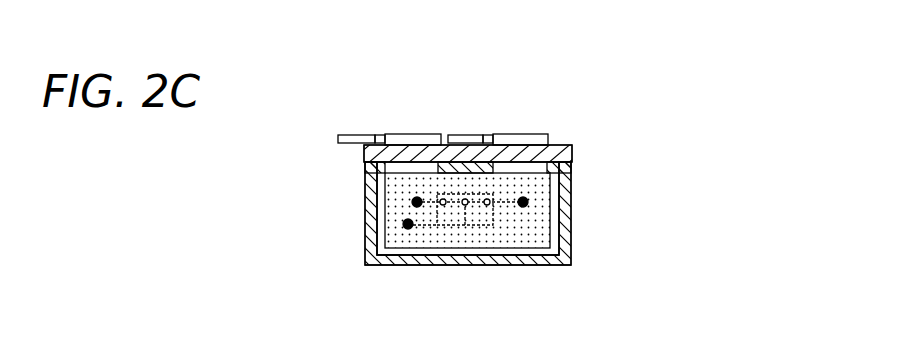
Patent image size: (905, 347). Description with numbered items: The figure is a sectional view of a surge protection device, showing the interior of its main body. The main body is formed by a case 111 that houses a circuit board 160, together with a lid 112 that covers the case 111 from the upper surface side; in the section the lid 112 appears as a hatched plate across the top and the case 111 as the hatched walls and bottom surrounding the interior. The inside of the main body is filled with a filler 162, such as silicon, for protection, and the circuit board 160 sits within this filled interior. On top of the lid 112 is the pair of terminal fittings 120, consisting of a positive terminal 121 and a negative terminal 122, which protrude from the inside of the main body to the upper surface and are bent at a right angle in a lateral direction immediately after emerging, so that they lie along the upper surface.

The case 111 is at (560, 225).
The lid 112 is at (565, 150).
The pair of terminal fittings 120 is at (443, 89).
The positive terminal 121 is at (498, 116).
The negative terminal 122 is at (417, 136).
The circuit board 160 is at (515, 238).
The filler 162 is at (413, 252).